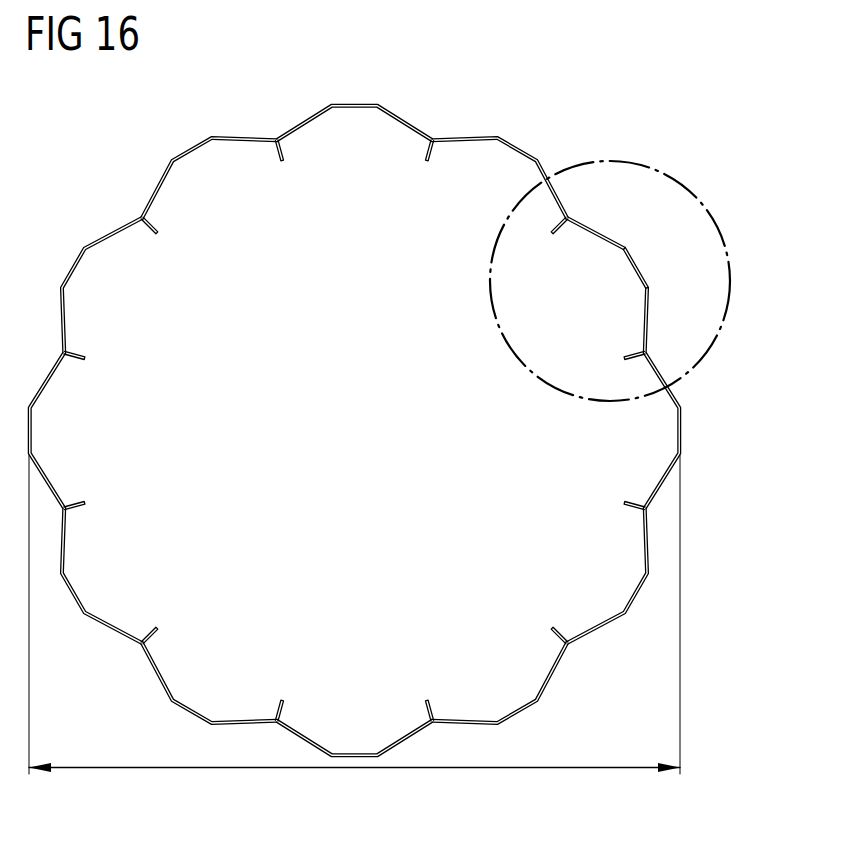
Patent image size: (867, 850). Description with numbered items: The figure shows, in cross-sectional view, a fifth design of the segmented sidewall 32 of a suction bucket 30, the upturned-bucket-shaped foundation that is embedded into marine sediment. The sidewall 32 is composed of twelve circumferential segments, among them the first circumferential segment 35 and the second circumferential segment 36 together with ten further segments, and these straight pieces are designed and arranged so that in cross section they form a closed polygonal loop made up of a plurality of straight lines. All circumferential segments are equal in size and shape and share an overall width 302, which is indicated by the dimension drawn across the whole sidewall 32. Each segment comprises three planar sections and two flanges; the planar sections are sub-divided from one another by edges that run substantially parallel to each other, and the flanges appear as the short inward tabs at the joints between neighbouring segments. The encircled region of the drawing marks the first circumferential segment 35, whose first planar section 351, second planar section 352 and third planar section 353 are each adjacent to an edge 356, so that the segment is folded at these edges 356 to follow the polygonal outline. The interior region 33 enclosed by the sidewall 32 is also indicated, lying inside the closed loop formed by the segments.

The suction bucket 30 is at (733, 609).
The sidewall 32 is at (518, 151).
The interior of ring 33 is at (221, 188).
The first circumferential segment 35 is at (638, 281).
The first planar section 351 is at (590, 232).
The second planar section 352 is at (635, 263).
The third planar section 353 is at (645, 322).
The edge 356 is at (635, 263).
The second circumferential segment 36 is at (702, 441).
The overall width 302 is at (353, 768).